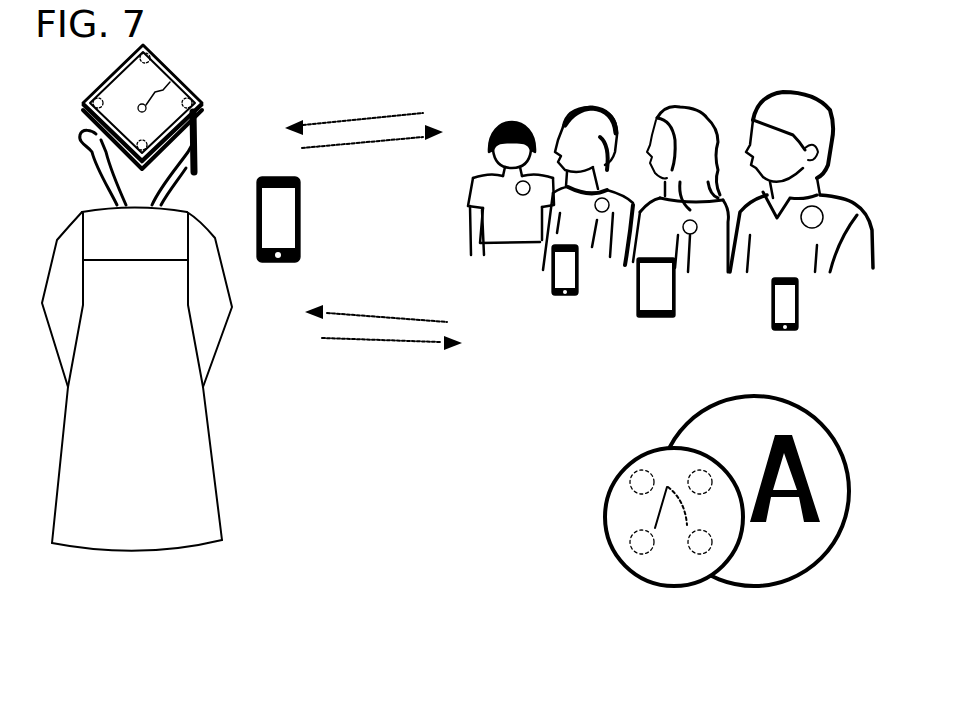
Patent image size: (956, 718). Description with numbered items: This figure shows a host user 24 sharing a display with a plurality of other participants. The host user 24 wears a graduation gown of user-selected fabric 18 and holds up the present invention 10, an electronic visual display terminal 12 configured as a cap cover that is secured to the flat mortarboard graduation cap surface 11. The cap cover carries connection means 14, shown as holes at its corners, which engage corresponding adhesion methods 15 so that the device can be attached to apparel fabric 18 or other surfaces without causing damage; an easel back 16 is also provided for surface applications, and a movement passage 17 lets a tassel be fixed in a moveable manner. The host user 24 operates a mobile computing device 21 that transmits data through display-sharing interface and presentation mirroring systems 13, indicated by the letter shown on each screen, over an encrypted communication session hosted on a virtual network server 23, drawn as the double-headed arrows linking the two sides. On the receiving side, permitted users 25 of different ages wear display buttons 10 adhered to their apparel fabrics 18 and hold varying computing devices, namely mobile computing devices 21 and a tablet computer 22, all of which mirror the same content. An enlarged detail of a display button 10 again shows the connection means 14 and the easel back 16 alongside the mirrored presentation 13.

The electronic visual display terminal display button and cap cover 10 is at (108, 75).
The graduation cap surface 11 is at (89, 120).
The electronic visual display terminal 12 is at (169, 80).
The display-sharing interface and presentation mirroring systems 13 is at (134, 132).
The connection means 14 is at (200, 101).
The corresponding adhesion methods 15 is at (199, 113).
The easel back 16 is at (162, 61).
The movement passage 17 is at (136, 108).
The fabric 18 is at (137, 182).
The mobile computing device 21 is at (256, 209).
The tablet computer 22 is at (657, 322).
The virtual network server 23 is at (372, 110).
The host user 24 is at (208, 533).
The permitted users 25 is at (518, 109).